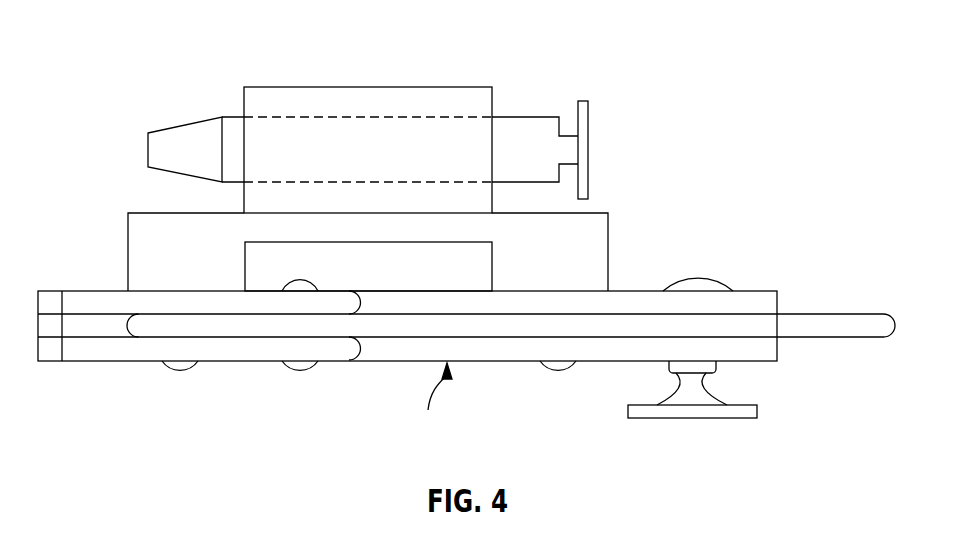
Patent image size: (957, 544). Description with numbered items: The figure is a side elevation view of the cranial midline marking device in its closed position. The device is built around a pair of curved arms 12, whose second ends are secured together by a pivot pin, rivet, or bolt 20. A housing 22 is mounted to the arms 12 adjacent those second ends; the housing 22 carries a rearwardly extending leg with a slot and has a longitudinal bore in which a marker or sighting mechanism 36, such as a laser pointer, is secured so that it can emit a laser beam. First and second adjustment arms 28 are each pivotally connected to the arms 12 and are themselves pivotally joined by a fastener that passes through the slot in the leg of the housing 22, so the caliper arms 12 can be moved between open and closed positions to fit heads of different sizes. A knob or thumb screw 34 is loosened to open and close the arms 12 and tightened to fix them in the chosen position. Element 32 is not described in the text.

The curved arms 12 is at (76, 290).
The pivot pin, rivet, or bolt 20 is at (300, 370).
The housing 22 is at (321, 87).
The adjustment arms 28 is at (432, 404).
The dome stop 32 is at (710, 280).
The knob or thumb screw 34 is at (691, 418).
The marker or sighting mechanism 36 is at (175, 128).